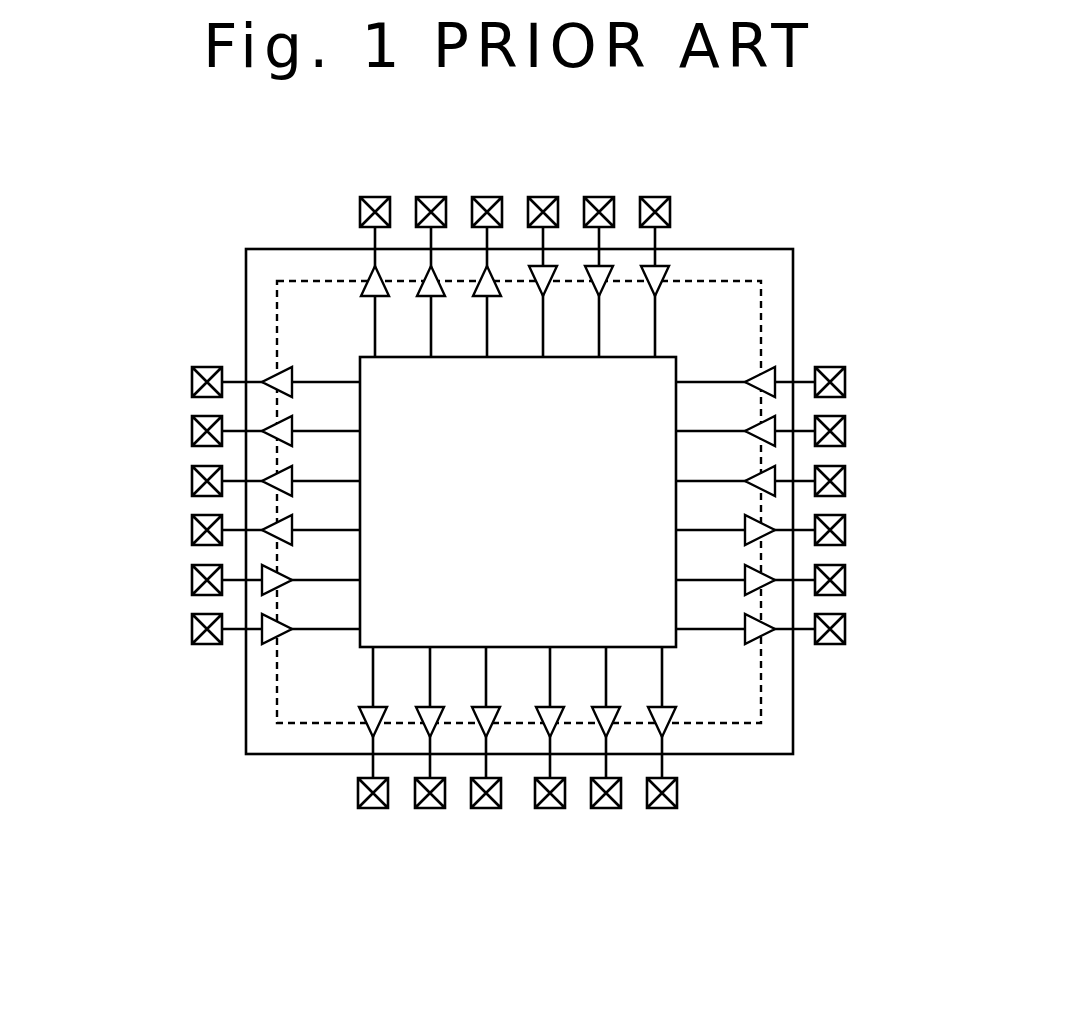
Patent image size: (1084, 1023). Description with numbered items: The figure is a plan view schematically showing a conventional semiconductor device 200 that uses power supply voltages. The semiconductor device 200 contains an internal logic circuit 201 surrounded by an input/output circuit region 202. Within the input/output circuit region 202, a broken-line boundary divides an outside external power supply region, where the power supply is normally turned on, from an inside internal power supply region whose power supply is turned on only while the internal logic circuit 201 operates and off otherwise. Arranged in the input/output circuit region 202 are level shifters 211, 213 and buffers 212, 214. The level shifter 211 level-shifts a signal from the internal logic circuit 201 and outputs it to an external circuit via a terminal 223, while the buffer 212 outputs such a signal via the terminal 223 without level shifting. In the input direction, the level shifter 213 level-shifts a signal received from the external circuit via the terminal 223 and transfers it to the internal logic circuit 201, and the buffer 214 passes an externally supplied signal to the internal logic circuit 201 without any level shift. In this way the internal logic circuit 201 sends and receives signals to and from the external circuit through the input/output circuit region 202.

The semiconductor device 200 is at (172, 341).
The internal logic circuit 201 is at (640, 357).
The input/output circuit region 202 is at (778, 305).
The level shifter 211 is at (767, 633).
The buffer 212 is at (370, 287).
The level shifter 213 is at (661, 272).
The buffer 214 is at (273, 645).
The terminal 223 is at (375, 197).